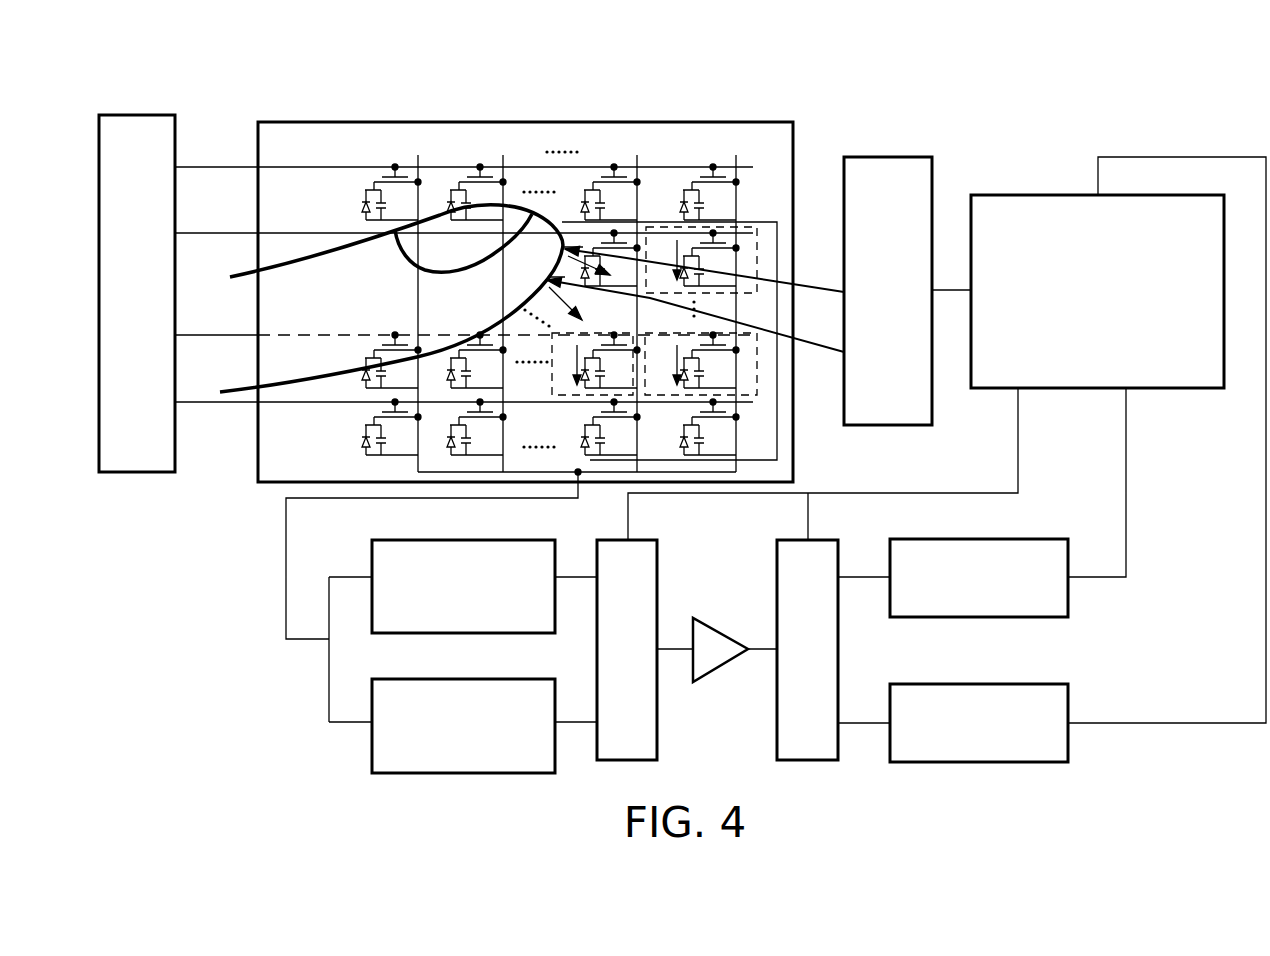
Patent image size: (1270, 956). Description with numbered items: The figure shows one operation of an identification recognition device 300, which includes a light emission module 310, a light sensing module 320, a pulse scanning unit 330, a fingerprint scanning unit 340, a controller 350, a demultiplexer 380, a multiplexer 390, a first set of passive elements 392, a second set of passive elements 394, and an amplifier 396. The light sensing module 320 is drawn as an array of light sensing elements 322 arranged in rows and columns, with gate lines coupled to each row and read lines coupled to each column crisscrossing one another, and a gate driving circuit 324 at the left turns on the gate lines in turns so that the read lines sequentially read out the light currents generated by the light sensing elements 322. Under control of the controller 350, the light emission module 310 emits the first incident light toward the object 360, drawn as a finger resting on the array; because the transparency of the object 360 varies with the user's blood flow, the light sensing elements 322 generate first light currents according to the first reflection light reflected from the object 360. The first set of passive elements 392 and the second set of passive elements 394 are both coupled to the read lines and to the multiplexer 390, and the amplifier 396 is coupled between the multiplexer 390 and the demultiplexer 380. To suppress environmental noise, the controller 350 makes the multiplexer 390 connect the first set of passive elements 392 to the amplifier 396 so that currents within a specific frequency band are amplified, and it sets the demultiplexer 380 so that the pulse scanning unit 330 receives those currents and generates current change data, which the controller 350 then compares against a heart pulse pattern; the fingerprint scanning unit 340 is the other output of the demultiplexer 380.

The identification recognition device 300 is at (1174, 118).
The light emission module 310 is at (878, 157).
The light sensing module 320 is at (686, 122).
The light sensing element 322 is at (757, 240).
The gate driving circuit 324 is at (147, 115).
The pulse scanning unit 330 is at (1020, 539).
The fingerprint scanning unit 340 is at (1020, 684).
The controller 350 is at (1010, 195).
The object 360 is at (250, 278).
The demultiplexer 380 is at (825, 540).
The multiplexer 390 is at (645, 540).
The first set of passive elements 392 is at (475, 540).
The second set of passive elements 394 is at (475, 679).
The amplifier 396 is at (722, 630).